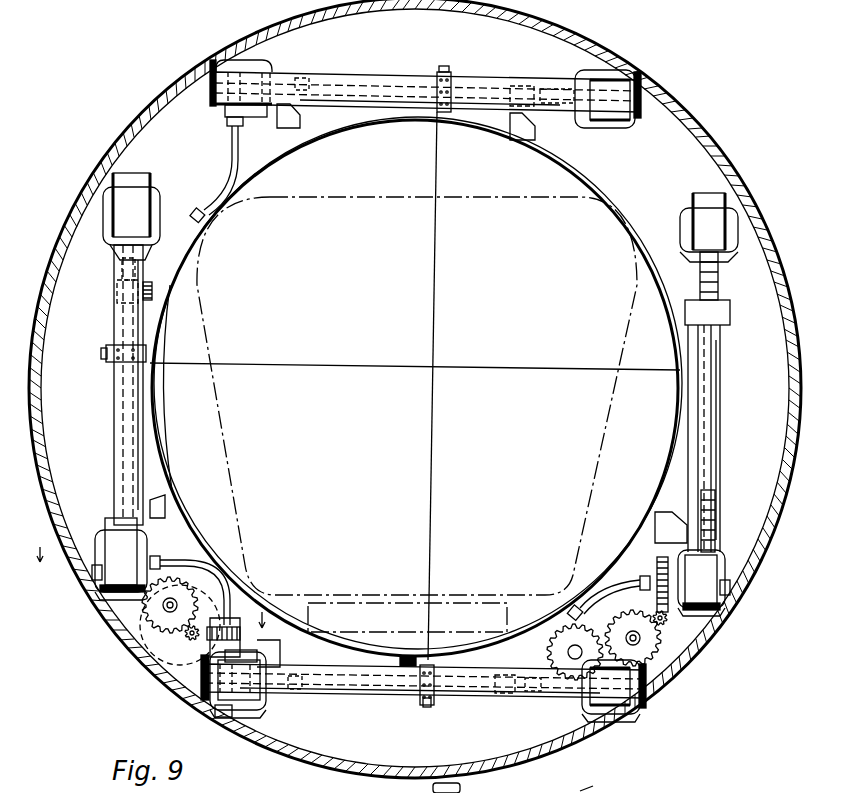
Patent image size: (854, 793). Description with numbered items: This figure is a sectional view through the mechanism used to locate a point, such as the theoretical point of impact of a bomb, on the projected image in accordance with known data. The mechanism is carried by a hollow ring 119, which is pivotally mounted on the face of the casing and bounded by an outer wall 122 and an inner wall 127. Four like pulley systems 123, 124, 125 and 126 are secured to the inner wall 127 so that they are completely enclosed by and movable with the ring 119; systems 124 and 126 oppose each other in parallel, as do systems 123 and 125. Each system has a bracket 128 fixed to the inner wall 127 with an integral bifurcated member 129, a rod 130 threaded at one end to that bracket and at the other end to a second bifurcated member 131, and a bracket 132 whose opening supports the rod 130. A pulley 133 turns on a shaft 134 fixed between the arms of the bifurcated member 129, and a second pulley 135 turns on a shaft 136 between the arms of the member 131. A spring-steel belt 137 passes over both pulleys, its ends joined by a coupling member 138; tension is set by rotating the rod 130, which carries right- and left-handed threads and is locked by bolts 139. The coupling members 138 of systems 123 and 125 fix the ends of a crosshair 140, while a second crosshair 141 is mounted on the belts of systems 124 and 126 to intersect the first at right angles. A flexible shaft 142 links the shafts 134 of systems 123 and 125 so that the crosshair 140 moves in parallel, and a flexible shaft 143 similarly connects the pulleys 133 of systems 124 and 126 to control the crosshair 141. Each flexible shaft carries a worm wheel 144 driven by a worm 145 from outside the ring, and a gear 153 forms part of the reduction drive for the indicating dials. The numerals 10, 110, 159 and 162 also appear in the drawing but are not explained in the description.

The apparatus 10 is at (30, 553).
The direction arrow 110 is at (275, 622).
The hollow ring 119 is at (625, 735).
The outer wall 122 is at (688, 106).
The pulley system 123 is at (400, 698).
The pulley system 124 is at (730, 431).
The pulley system 125 is at (388, 72).
The pulley system 126 is at (103, 380).
The inner wall 127 is at (245, 592).
The bracket 128 is at (285, 130).
The bifurcated member 129 is at (258, 64).
The rod 130 is at (485, 80).
The bifurcated member 131 is at (612, 76).
The bracket 132 is at (520, 87).
The pulley 133 is at (215, 66).
The shaft 134 is at (228, 100).
The second pulley 135 is at (600, 122).
The shaft 136 is at (634, 118).
The belt 137 is at (365, 100).
The coupling member 138 is at (442, 112).
The bolt 139 is at (302, 80).
The crosshair 140 is at (438, 338).
The second crosshair 141 is at (294, 370).
The flexible shaft 142 is at (155, 455).
The flexible shaft 143 is at (430, 657).
The worm wheel 144 is at (212, 636).
The worm 145 is at (165, 640).
The gear 153 is at (645, 672).
The support 159 is at (533, 782).
The bracket 162 is at (601, 785).